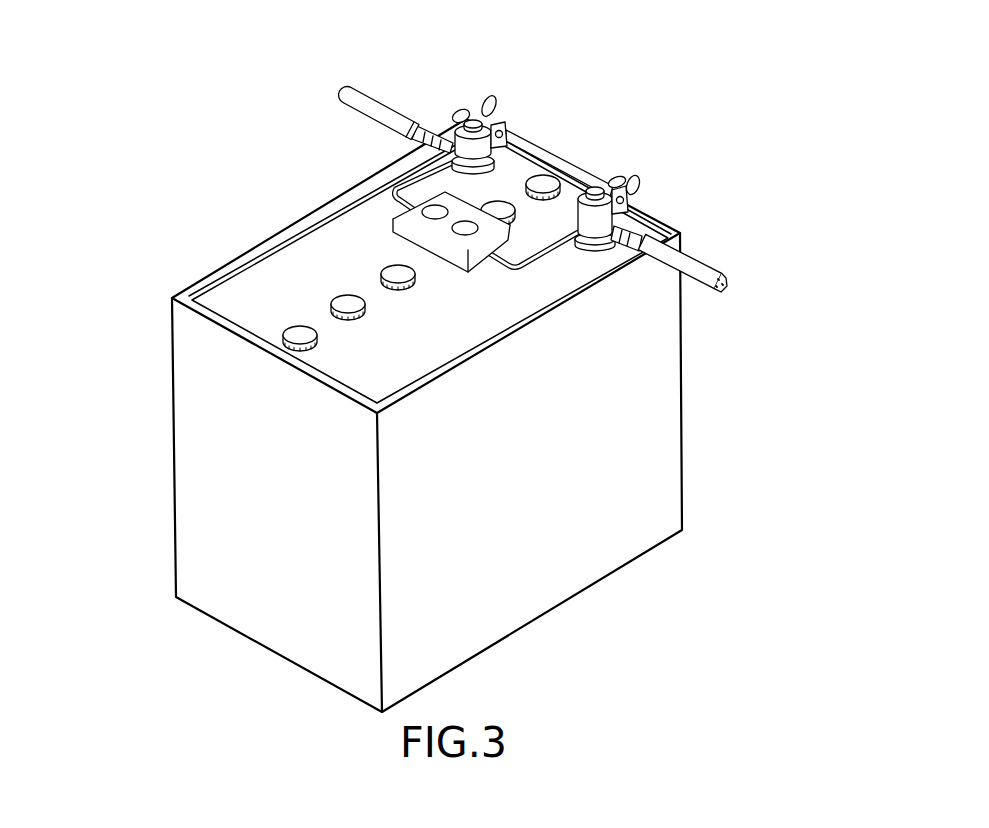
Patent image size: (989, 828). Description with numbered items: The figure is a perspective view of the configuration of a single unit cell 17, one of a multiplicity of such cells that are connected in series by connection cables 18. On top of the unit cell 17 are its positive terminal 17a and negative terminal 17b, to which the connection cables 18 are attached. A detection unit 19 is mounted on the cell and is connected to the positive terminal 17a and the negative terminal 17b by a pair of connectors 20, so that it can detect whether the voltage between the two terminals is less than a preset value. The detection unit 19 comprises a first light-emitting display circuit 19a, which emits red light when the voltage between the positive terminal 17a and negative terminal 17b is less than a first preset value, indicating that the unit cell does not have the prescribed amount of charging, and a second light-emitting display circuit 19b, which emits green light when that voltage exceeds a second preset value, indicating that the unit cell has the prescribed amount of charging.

The unit cell 17 is at (175, 488).
The positive terminal 17a is at (598, 193).
The negative terminal 17b is at (475, 121).
The connection cable 18 is at (350, 102).
The detection unit 19 is at (455, 420).
The first light-emitting display circuit 19a is at (423, 213).
The second light-emitting display circuit 19b is at (466, 233).
The connector 20 is at (565, 245).